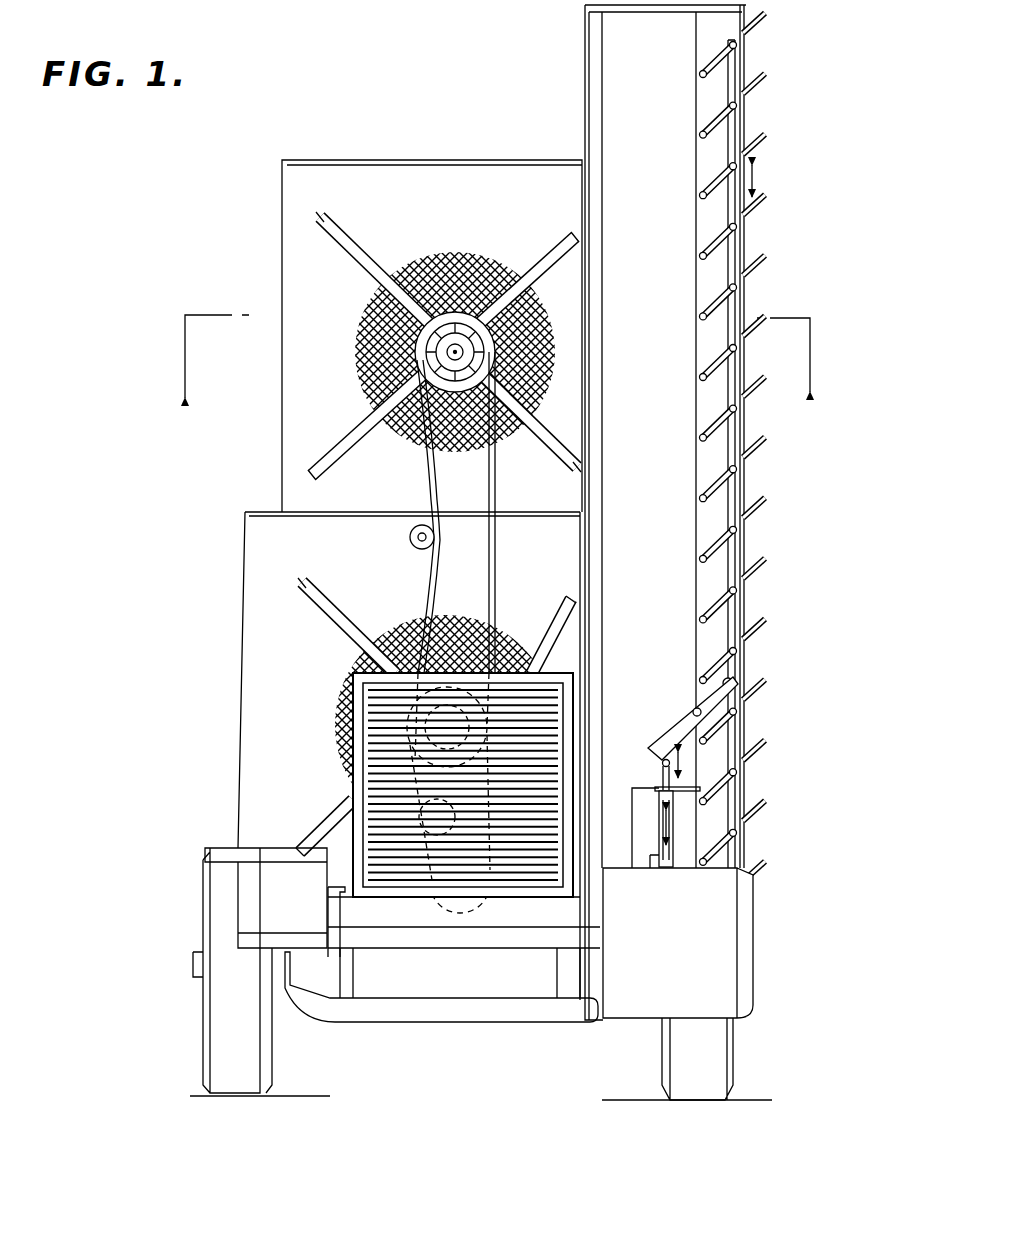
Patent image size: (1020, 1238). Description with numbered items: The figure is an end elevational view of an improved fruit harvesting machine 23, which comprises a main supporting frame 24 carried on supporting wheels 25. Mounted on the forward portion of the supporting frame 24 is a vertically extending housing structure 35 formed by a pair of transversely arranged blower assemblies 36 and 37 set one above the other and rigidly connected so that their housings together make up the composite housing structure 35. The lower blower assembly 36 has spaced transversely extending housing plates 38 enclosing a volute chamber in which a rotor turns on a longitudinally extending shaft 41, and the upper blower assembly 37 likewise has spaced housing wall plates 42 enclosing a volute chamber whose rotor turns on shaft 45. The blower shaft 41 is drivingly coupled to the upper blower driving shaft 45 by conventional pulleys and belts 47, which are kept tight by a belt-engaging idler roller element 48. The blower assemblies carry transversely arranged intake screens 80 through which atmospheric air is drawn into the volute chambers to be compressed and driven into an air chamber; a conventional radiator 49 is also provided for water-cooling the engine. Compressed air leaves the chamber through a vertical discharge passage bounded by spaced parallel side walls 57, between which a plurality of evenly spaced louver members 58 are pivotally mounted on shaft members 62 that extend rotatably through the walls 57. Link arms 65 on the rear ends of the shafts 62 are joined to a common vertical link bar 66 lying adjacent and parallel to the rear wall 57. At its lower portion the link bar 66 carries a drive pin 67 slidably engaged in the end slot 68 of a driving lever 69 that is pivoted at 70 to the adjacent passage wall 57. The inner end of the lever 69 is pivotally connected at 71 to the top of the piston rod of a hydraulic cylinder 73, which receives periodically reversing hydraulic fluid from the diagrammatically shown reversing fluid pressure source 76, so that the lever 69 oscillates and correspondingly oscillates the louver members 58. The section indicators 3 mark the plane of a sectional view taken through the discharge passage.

The section line 3- 3 is at (494, 356).
The fruit harvesting machine 23 is at (268, 170).
The main supporting frame 24 is at (447, 1020).
The supporting wheels 25 is at (255, 1058).
The housing structure 35 is at (460, 160).
The lower blower assembly 36 is at (241, 638).
The upper blower assembly 37 is at (282, 383).
The housing plates 38 is at (344, 556).
The blower shaft 41 is at (473, 802).
The housing wall plates 42 is at (374, 212).
The upper blower driving shaft 45 is at (496, 262).
The pulleys and belts 47 is at (495, 580).
The idler roller element 48 is at (410, 547).
The radiator 49 is at (550, 673).
The side walls 57 is at (707, 756).
The louver members 58 is at (758, 513).
The shaft members 62 is at (690, 573).
The link arms 65 is at (708, 548).
The vertical link bar 66 is at (736, 494).
The drive pin 67 is at (732, 672).
The end slot 68 is at (700, 699).
The driving lever 69 is at (662, 732).
The pivot 70 is at (692, 712).
The pivotal connection 71 is at (657, 775).
The hydraulic cylinder 73 is at (668, 848).
The reversing fluid pressure source 76 is at (617, 1020).
The intake screens 80 is at (448, 262).